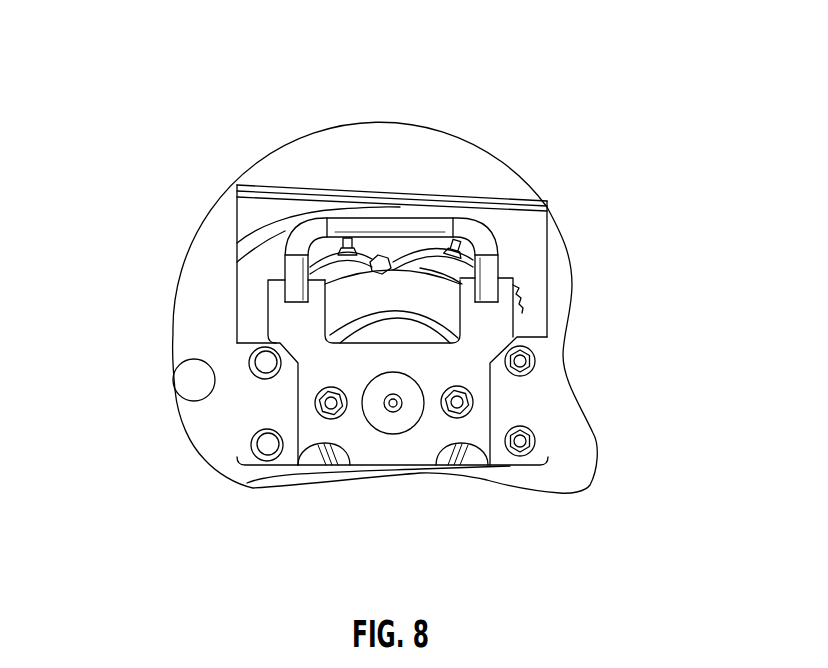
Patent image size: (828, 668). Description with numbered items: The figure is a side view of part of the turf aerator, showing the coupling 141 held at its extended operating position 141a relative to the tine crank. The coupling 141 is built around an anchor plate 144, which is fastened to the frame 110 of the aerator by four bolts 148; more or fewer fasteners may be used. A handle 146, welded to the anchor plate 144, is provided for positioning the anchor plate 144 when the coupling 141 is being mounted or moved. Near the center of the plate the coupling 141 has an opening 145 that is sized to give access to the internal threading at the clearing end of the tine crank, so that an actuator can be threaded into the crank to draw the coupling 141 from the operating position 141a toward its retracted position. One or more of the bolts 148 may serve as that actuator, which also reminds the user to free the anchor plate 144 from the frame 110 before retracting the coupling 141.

The frame 110 is at (277, 406).
The coupling 141 is at (517, 247).
The operating position 141a is at (234, 306).
The anchor plate 144 is at (466, 350).
The opening 145 is at (393, 408).
The handle 146 is at (418, 218).
The bolts 148 is at (263, 366).